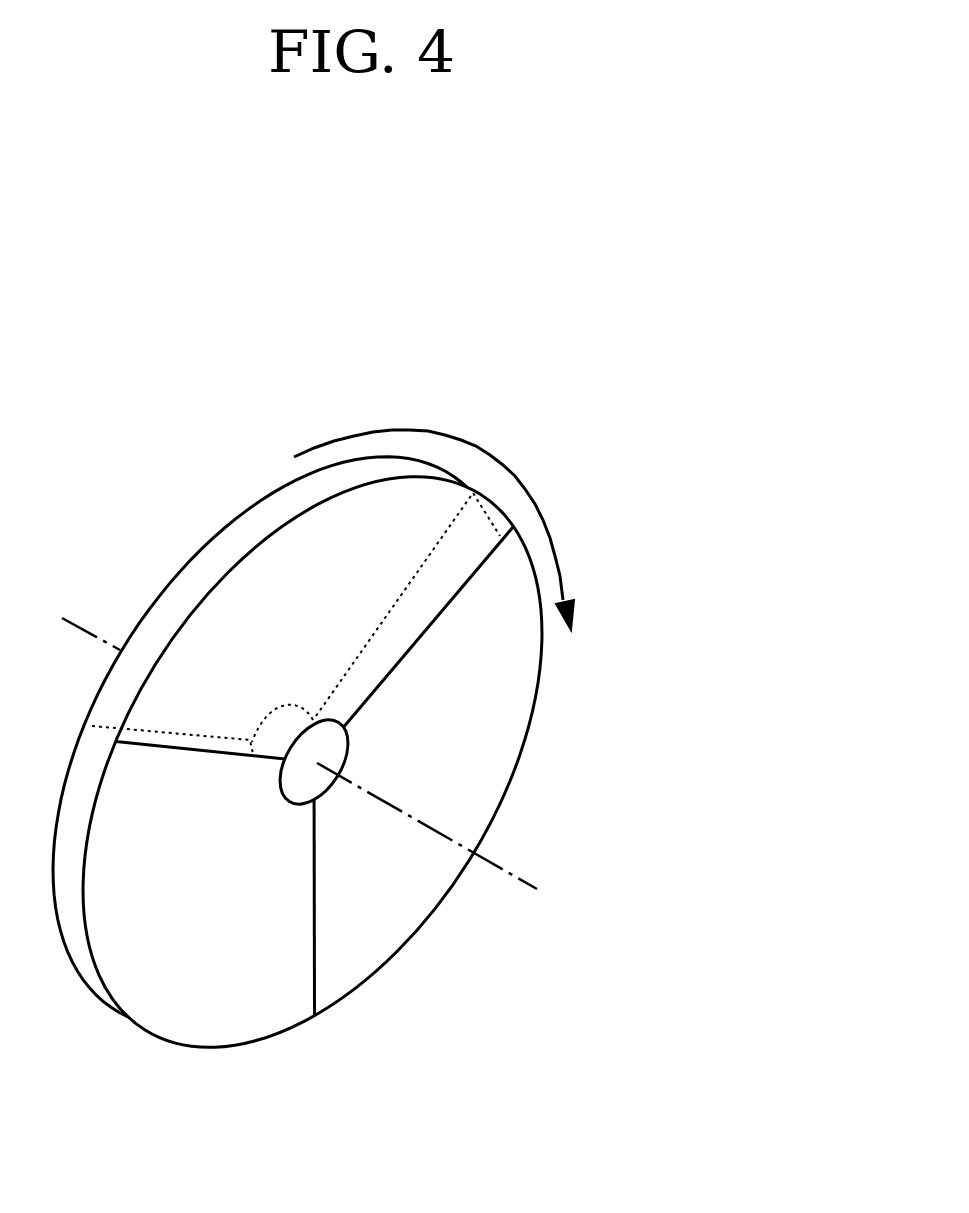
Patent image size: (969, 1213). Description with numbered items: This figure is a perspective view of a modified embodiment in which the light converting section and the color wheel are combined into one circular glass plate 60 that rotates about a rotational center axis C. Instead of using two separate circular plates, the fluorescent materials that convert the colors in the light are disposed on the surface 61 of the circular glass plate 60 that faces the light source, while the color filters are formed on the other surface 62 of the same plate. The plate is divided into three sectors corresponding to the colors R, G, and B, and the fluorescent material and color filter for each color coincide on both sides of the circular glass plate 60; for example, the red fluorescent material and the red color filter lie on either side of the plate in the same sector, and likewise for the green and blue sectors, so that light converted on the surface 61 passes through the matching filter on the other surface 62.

The circular glass plate 60 is at (412, 705).
The surface facing the light source 61 is at (203, 546).
The other surface 62 is at (334, 762).
The rotational center axis C is at (518, 878).
The red color R is at (189, 901).
The green color G is at (295, 630).
The blue color B is at (451, 756).